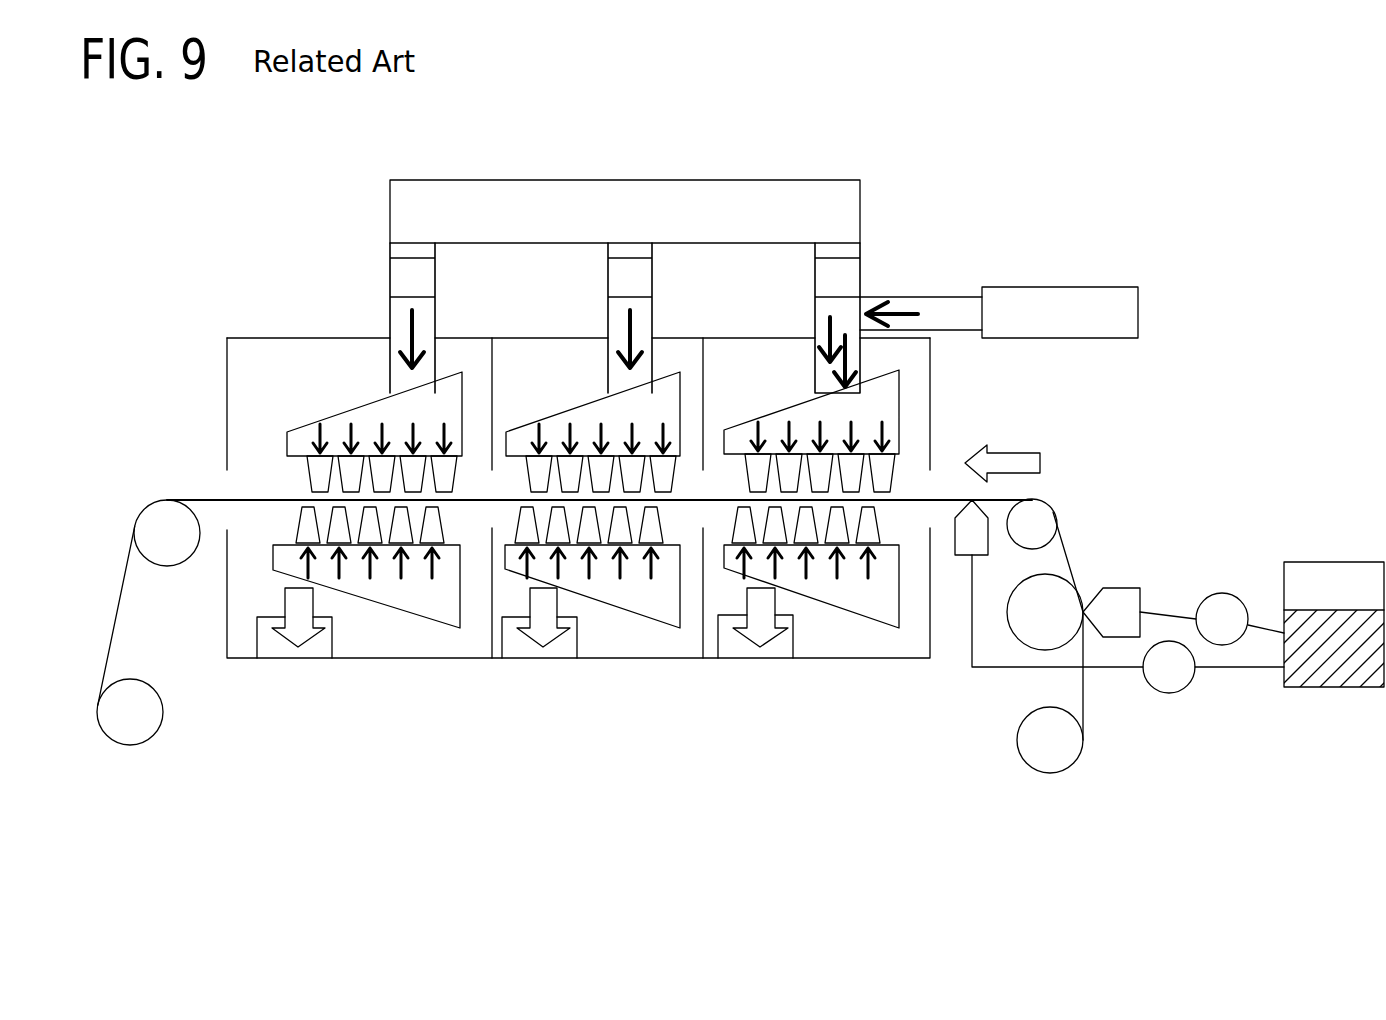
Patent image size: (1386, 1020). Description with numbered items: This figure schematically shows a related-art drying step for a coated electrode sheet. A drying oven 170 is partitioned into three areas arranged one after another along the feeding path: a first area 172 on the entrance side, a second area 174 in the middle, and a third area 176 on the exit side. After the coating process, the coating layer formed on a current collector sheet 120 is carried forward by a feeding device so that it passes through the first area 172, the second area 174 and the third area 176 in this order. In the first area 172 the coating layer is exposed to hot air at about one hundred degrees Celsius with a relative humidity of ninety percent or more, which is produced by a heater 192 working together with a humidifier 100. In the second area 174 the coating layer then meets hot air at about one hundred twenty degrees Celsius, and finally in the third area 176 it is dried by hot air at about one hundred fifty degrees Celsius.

The humidifier 100 is at (1078, 287).
The current collector sheet 120 is at (1072, 545).
The drying oven 170 is at (285, 338).
The first area 172 is at (857, 648).
The second area 174 is at (637, 650).
The third area 176 is at (400, 648).
The heater 192 is at (862, 283).